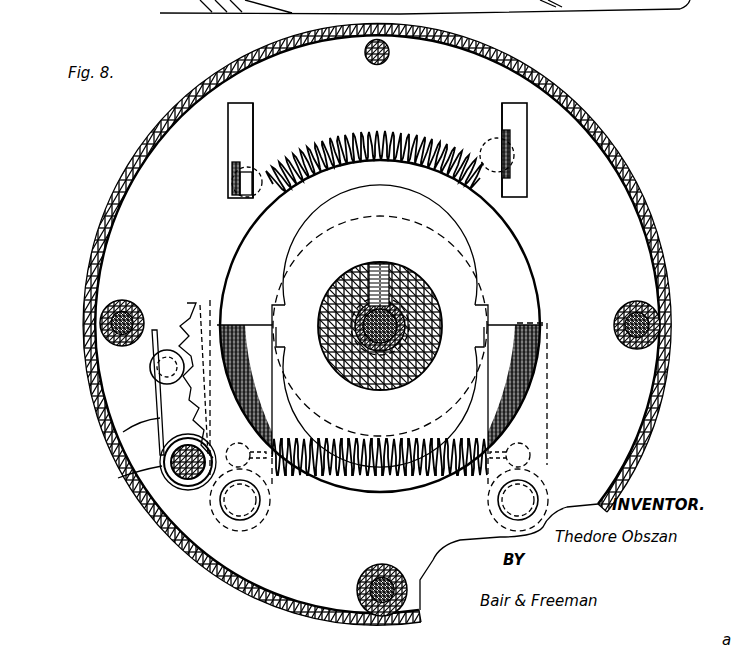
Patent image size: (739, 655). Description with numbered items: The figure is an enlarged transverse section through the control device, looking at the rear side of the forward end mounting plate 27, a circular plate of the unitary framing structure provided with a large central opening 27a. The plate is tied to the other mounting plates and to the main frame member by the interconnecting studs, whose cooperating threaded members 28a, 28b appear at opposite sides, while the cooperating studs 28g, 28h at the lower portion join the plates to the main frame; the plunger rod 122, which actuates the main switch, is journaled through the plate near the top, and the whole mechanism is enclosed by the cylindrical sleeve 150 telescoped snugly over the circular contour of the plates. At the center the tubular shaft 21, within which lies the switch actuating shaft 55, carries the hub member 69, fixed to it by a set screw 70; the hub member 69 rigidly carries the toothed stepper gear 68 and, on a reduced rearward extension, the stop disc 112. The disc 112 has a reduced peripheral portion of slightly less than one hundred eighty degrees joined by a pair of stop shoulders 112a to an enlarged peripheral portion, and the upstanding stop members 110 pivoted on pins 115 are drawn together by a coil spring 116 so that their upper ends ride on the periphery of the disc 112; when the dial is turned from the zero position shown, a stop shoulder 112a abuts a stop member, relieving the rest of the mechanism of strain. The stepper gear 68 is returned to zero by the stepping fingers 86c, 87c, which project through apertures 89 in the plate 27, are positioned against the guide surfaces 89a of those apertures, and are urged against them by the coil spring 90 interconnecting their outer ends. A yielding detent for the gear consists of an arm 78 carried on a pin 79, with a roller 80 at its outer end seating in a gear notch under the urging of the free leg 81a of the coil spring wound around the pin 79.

The forward end mounting plate 27 is at (592, 162).
The large central opening 27a is at (512, 238).
The cylindrical sleeve 150 is at (578, 106).
The plunger rod 122 is at (386, 60).
The threaded member 28a is at (121, 320).
The threaded member 28b is at (113, 333).
The stud 28g is at (386, 576).
The stud 28h is at (392, 592).
The stepper gear 68 is at (221, 348).
The brake shoe 110 is at (236, 328).
The coil spring 116 is at (347, 474).
The pin 115 is at (246, 507).
The disc 112 is at (420, 246).
The stop shoulder 112a is at (276, 302).
The hub member 69 is at (392, 296).
The switch actuating shaft 55 is at (400, 318).
The tubular shaft 21 is at (398, 330).
The set screw 70 is at (383, 268).
The coil spring 90 is at (330, 190).
The aperture 89 is at (240, 113).
The guide surface 89a is at (254, 132).
The stepping finger 87c is at (232, 172).
The stepping finger 86c is at (511, 135).
The roller 80 is at (154, 366).
The arm 78 is at (156, 392).
The free leg 81a is at (156, 421).
The pin 79 is at (172, 470).